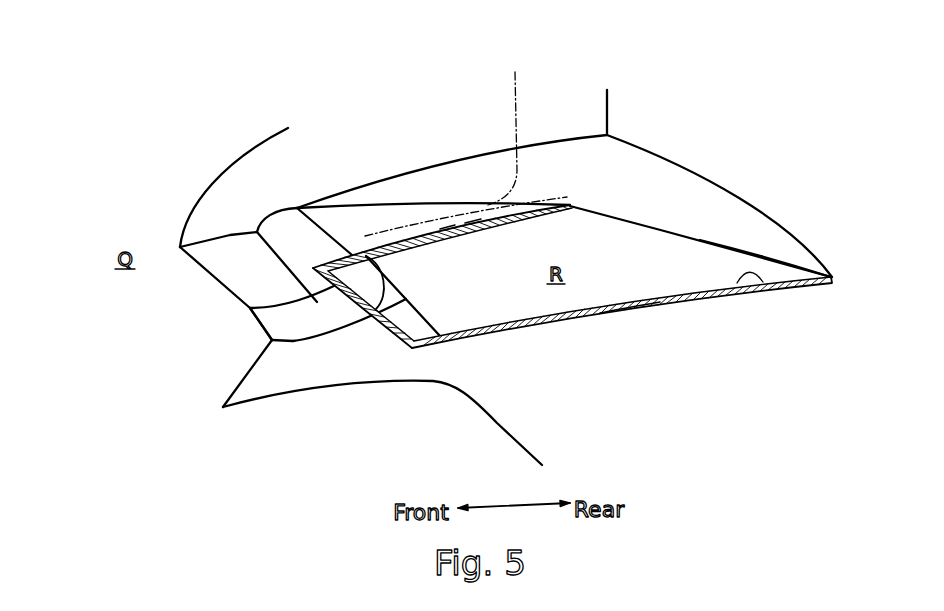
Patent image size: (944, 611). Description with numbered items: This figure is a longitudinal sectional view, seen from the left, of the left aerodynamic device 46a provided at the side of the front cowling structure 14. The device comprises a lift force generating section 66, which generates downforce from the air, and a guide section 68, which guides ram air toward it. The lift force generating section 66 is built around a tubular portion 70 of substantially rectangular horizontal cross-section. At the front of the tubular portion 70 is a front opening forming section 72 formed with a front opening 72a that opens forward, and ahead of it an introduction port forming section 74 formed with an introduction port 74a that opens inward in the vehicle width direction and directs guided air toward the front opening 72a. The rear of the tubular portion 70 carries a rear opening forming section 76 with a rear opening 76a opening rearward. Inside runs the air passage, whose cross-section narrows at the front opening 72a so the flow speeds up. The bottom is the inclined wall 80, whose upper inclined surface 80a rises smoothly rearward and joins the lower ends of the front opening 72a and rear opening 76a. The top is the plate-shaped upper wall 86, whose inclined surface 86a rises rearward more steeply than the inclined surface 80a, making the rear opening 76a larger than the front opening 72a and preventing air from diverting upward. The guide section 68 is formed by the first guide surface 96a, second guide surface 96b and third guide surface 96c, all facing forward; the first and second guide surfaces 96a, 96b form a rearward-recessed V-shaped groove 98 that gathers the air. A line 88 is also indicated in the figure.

The front cowling structure 14 is at (250, 195).
The left aerodynamic device 46a is at (368, 235).
The lift force generating section 66 is at (571, 202).
The guide section 68 is at (262, 352).
The tubular portion 70 is at (632, 312).
The front opening forming section 72 is at (388, 262).
The front opening 72a is at (410, 310).
The introduction port forming section 74 is at (322, 292).
The introduction port 74a is at (373, 308).
The rear opening forming section 76 is at (620, 217).
The rear opening 76a is at (730, 248).
The inclined wall 80 is at (712, 303).
The inclined surface 80a is at (763, 282).
The upper wall 86 is at (447, 231).
The inclined surface 86a is at (473, 226).
The hidden seal line 88 is at (507, 125).
The first guide surface 96a is at (327, 375).
The second guide surface 96b is at (260, 335).
The third guide surface 96c is at (257, 356).
The V-shaped groove 98 is at (297, 357).